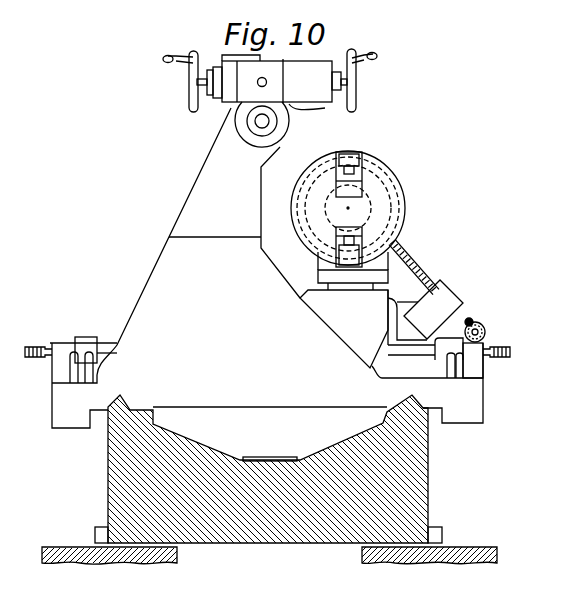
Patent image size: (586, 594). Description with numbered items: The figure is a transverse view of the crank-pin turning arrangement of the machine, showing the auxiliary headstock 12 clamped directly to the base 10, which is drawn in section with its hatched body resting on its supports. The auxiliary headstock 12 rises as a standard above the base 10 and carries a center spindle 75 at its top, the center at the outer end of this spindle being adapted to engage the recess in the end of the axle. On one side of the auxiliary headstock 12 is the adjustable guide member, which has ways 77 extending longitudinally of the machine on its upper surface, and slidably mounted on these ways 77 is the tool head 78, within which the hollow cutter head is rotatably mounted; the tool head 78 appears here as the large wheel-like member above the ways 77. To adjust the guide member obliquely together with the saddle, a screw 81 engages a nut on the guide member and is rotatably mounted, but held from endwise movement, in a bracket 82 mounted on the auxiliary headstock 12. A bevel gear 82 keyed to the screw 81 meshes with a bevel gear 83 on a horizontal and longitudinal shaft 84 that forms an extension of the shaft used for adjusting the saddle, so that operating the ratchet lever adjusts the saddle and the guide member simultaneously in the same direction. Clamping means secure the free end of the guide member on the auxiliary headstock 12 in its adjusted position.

The base 10 is at (415, 479).
The auxiliary headstock 12 is at (207, 187).
The center spindle 75 is at (270, 122).
The ways 77 is at (343, 281).
The tool head 78 is at (396, 181).
The screw 81 is at (419, 276).
The bevel gear 82 is at (472, 319).
The bevel gear 83 is at (485, 330).
The shaft 84 is at (481, 330).